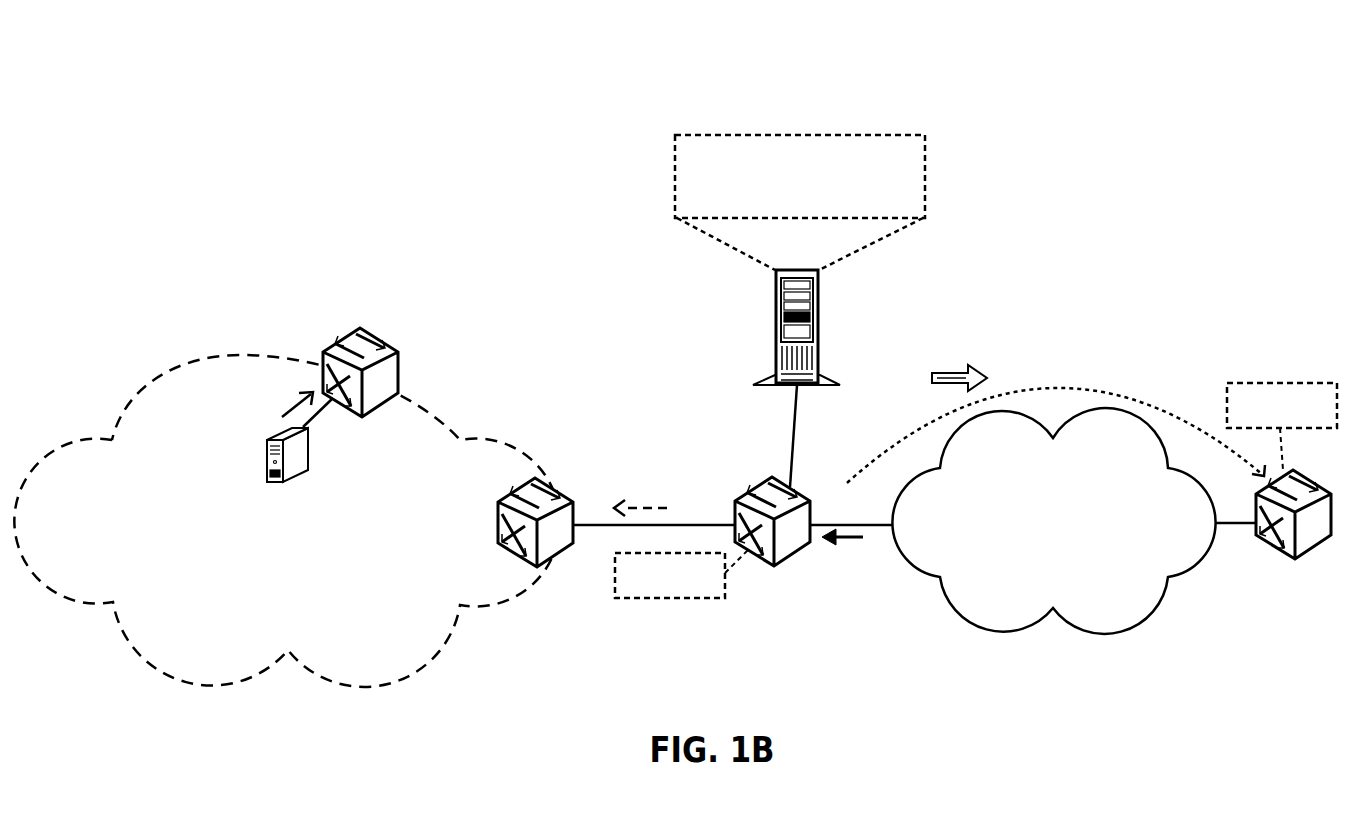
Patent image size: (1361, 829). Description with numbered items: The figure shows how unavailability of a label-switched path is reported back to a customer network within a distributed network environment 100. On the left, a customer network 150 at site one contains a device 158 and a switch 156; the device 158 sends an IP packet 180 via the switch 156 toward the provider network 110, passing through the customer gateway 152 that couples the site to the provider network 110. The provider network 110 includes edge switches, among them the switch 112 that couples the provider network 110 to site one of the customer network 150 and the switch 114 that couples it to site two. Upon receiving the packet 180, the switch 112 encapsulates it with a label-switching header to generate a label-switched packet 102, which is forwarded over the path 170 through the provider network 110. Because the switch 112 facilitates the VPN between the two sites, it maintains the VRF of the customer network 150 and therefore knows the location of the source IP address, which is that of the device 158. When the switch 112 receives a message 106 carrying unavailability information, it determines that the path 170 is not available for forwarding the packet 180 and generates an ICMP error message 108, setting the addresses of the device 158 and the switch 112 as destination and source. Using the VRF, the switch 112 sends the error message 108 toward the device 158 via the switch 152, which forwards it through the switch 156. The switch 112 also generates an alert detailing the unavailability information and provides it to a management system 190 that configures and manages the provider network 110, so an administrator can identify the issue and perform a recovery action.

The distributed network environment 100 is at (233, 188).
The label-switched packet 102 is at (940, 372).
The message 106 is at (853, 541).
The error message 108 is at (634, 505).
The provider network 110 is at (1071, 551).
The edge switch 112 is at (808, 505).
The edge switch 114 is at (1331, 515).
The customer network 150 is at (305, 547).
The customer gateway 152 is at (548, 490).
The switch 156 is at (390, 343).
The device 158 is at (267, 458).
The path 170 is at (1053, 388).
The IP packet 180 is at (287, 397).
The management system 190 is at (818, 206).